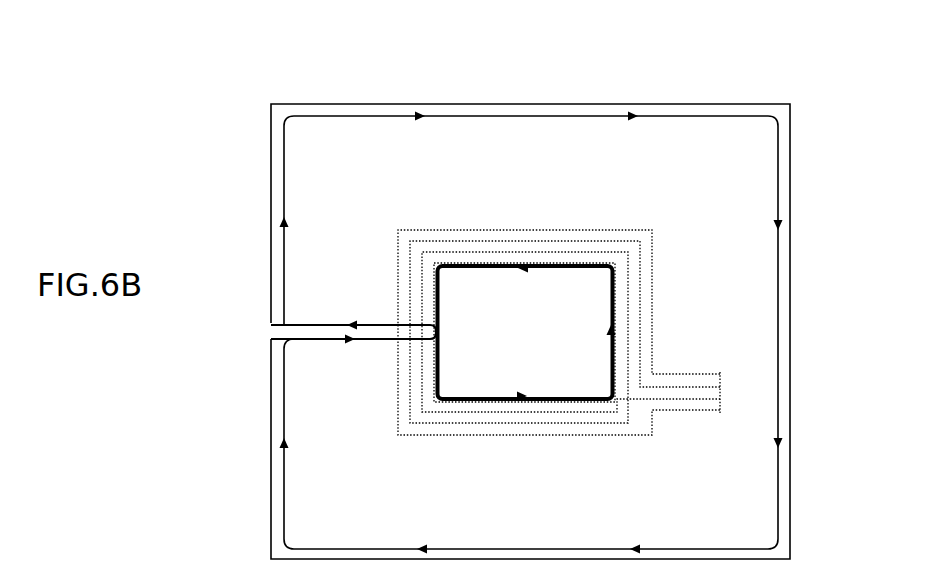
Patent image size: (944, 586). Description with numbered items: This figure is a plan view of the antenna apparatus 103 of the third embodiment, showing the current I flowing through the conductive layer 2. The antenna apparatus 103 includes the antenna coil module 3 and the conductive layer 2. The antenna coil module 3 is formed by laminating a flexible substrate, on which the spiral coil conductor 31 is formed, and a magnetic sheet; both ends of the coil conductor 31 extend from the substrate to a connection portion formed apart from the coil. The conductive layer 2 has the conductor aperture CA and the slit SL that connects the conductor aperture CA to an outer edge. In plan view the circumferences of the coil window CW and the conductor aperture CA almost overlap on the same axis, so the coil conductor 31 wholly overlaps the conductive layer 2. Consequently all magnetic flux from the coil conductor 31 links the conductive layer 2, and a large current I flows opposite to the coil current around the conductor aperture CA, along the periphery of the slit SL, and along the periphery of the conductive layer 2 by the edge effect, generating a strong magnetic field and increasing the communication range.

The antenna apparatus 103 is at (862, 82).
The conductive layer 2 is at (652, 125).
The antenna coil module 3 is at (654, 229).
The coil conductor 31 is at (536, 263).
The coil window CW is at (485, 308).
The conductor aperture CA is at (622, 300).
The slit SL is at (262, 330).
The current I is at (780, 298).